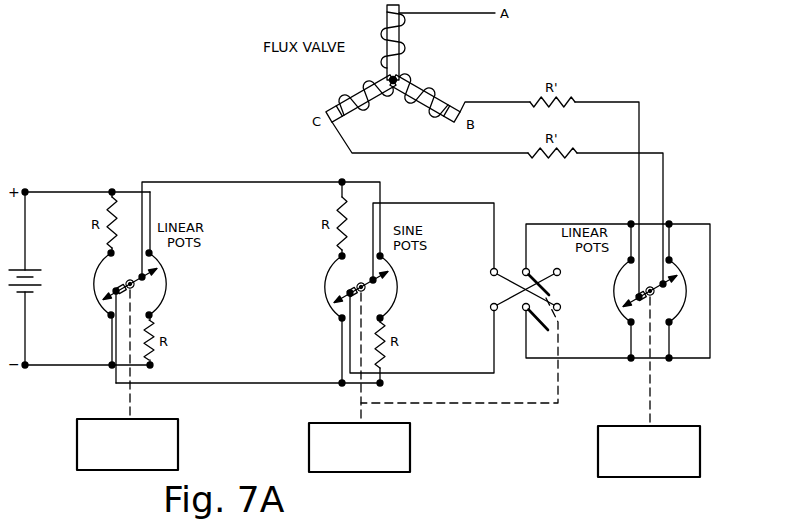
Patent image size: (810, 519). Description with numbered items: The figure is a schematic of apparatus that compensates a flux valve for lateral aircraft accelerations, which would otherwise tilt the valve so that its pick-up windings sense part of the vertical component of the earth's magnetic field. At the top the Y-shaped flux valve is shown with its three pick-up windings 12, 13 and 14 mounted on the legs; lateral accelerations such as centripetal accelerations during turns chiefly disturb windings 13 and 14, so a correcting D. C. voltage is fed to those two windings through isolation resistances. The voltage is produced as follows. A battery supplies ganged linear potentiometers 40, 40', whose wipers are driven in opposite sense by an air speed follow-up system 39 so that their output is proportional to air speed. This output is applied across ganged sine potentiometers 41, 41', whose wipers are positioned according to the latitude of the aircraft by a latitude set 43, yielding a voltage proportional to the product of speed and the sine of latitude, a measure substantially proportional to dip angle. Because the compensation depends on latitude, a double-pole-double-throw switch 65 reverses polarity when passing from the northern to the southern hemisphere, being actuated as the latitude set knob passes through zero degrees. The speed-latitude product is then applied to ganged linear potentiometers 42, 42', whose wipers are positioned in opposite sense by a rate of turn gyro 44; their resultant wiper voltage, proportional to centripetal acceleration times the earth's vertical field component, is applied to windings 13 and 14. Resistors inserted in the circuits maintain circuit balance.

The pick-up winding 12 is at (405, 43).
The pick-up winding 13 is at (430, 96).
The pick-up winding 14 is at (362, 106).
The air speed follow-up system 39 is at (178, 449).
The linear potentiometer 40 is at (104, 334).
The linear potentiometer 40' is at (185, 284).
The sine potentiometer 41 is at (337, 338).
The sine potentiometer 41' is at (418, 287).
The linear potentiometer 42 is at (630, 341).
The linear potentiometer 42' is at (705, 291).
The latitude set 43 is at (410, 455).
The rate of turn gyro 44 is at (700, 455).
The double-pole-double-throw switch 65 is at (503, 268).